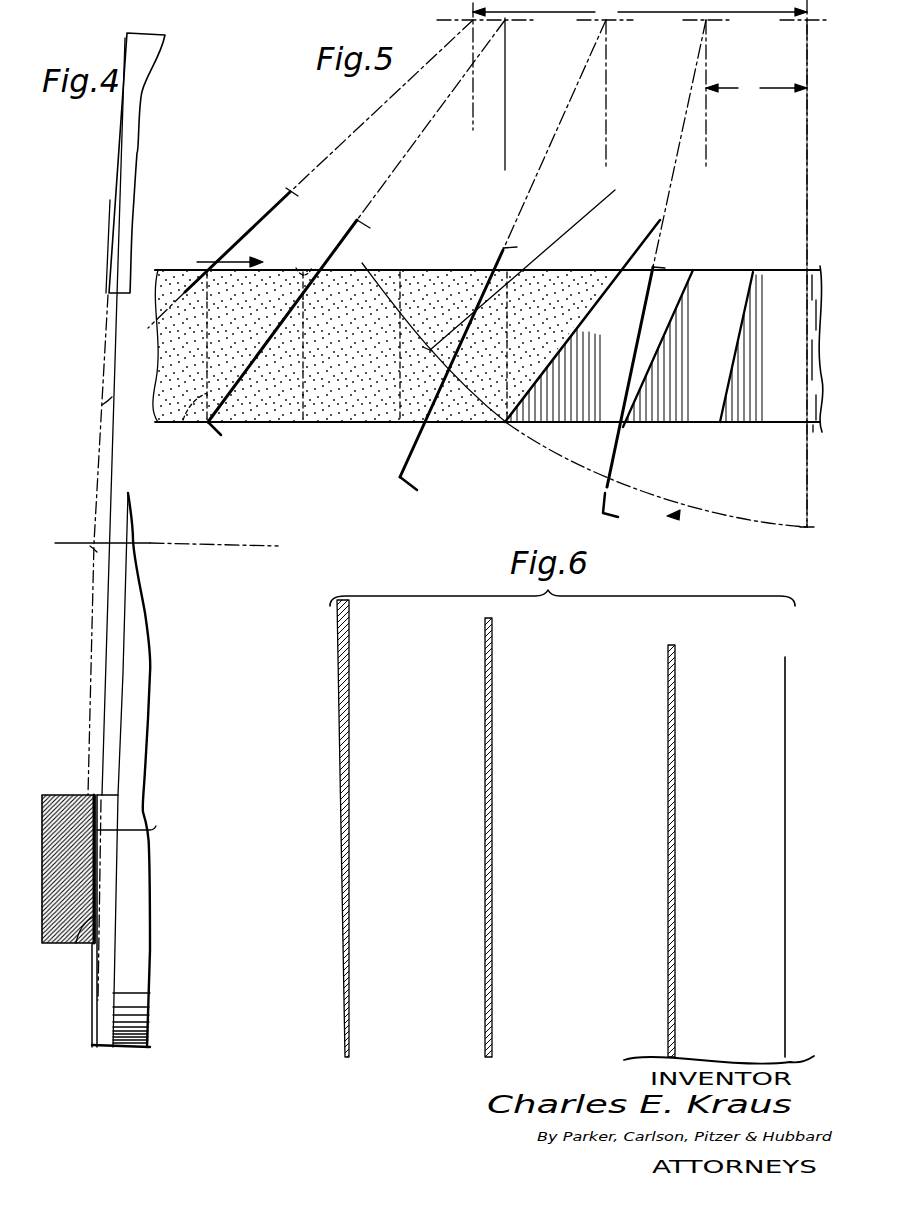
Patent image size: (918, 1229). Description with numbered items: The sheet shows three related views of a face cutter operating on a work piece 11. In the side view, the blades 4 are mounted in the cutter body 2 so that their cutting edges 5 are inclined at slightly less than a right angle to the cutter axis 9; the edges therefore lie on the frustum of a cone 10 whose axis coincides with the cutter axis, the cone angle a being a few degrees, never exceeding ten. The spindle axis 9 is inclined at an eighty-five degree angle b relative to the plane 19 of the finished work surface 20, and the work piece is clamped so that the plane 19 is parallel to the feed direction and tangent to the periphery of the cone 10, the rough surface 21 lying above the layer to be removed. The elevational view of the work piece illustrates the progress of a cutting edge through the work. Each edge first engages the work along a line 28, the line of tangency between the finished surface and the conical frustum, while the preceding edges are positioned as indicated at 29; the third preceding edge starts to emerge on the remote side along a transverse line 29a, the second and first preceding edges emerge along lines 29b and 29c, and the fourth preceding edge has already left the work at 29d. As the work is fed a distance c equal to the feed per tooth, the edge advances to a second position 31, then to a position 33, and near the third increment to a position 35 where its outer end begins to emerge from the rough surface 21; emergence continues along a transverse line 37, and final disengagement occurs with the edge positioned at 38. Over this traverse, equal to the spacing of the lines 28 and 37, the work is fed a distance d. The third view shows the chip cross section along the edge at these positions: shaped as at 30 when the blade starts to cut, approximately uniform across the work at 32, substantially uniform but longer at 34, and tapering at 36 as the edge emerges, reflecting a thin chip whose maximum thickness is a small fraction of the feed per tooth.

In FIG. 4, the body 2 is at (142, 767).
In FIG. 4, the blade 4 is at (130, 160).
In FIG. 4, the edges 5 is at (110, 258).
In FIG. 4, the axis 9 is at (258, 546).
In FIG. 5, the axis 9 is at (807, 20).
In FIG. 6, the axis 9 is at (545, 592).
In FIG. 4, the cone 10 is at (103, 360).
In FIG. 4, the work piece 11 is at (63, 806).
In FIG. 5, the work piece 11 is at (441, 269).
In FIG. 4, the plane 19 is at (78, 950).
In FIG. 5, the finished work surface 20 is at (815, 415).
In FIG. 4, the rough surface 21 is at (150, 830).
In FIG. 5, the rough surface 21 is at (318, 397).
In FIG. 5, the line 28 is at (806, 498).
In FIG. 5, the preceding blade edges 29 is at (623, 192).
In FIG. 5, the transverse line 29a is at (520, 262).
In FIG. 5, the line 29b is at (390, 270).
In FIG. 5, the line 29c is at (305, 268).
In FIG. 5, the line 29d is at (612, 280).
In FIG. 6, the chip cross section 30 is at (785, 930).
In FIG. 5, the second position 31 is at (600, 501).
In FIG. 6, the chip cross section 32 is at (675, 843).
In FIG. 5, the position 33 is at (409, 464).
In FIG. 6, the chip cross section 34 is at (492, 843).
In FIG. 5, the position 35 is at (222, 432).
In FIG. 6, the chip cross section 36 is at (349, 756).
In FIG. 5, the transverse line 37 is at (185, 422).
In FIG. 5, the blade edge position 38 is at (255, 228).
In FIG. 4, the cone angle a is at (108, 399).
In FIG. 5, the cone angle a is at (675, 520).
In FIG. 4, the angle b is at (96, 550).
In FIG. 5, the distance c is at (756, 88).
In FIG. 5, the distance d is at (632, 263).